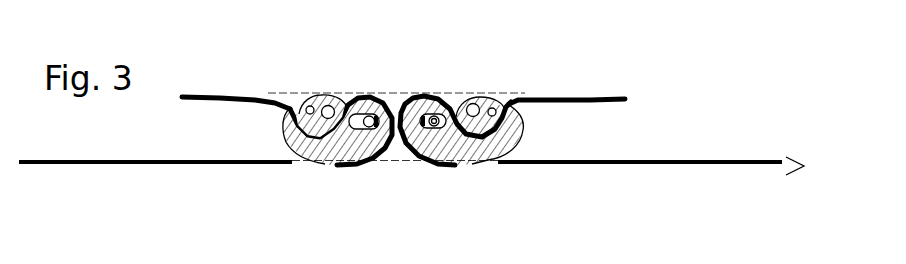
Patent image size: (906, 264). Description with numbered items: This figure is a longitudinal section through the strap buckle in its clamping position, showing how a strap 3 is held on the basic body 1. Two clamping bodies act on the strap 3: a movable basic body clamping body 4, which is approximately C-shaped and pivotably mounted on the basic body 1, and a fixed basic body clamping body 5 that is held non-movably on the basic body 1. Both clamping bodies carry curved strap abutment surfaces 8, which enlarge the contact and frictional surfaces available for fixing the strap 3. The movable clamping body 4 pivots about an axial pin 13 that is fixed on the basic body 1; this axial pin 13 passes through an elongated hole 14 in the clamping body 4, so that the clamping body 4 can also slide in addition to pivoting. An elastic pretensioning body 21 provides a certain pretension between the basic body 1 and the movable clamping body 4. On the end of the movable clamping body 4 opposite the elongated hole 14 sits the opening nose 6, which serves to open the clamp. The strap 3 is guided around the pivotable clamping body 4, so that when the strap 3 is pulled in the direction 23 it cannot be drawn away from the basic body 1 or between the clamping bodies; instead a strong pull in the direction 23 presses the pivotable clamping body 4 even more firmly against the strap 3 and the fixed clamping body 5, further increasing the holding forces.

The basic body 1 is at (398, 116).
The strap 3 is at (595, 99).
The movable basic body clamping body 4 is at (463, 152).
The fixed basic body clamping body 5 is at (497, 100).
The opening nose 6 is at (513, 100).
The strap abutment surfaces 8 is at (455, 101).
The axial pin 13 is at (431, 127).
The elongated hole 14 is at (445, 100).
The elastic pretensioning body 21 is at (413, 140).
The direction 23 is at (787, 162).